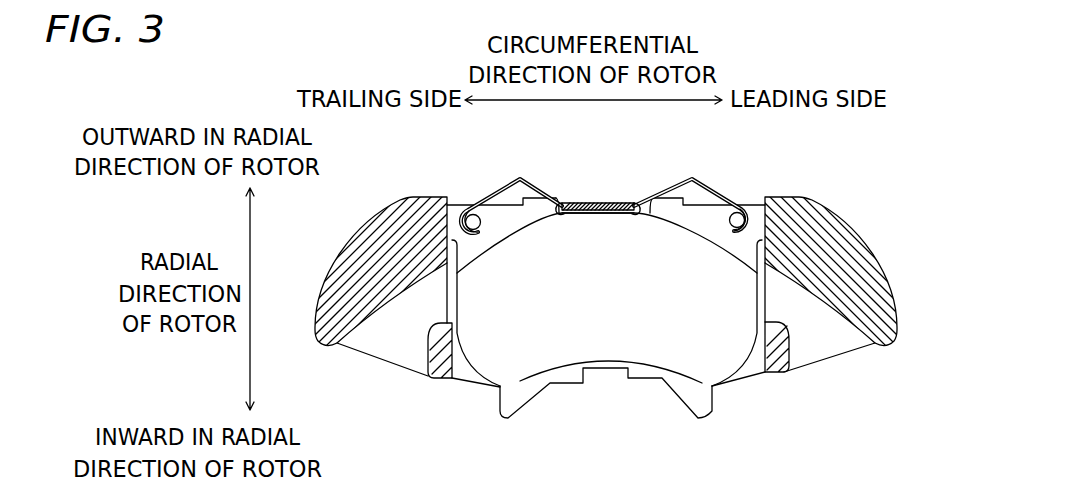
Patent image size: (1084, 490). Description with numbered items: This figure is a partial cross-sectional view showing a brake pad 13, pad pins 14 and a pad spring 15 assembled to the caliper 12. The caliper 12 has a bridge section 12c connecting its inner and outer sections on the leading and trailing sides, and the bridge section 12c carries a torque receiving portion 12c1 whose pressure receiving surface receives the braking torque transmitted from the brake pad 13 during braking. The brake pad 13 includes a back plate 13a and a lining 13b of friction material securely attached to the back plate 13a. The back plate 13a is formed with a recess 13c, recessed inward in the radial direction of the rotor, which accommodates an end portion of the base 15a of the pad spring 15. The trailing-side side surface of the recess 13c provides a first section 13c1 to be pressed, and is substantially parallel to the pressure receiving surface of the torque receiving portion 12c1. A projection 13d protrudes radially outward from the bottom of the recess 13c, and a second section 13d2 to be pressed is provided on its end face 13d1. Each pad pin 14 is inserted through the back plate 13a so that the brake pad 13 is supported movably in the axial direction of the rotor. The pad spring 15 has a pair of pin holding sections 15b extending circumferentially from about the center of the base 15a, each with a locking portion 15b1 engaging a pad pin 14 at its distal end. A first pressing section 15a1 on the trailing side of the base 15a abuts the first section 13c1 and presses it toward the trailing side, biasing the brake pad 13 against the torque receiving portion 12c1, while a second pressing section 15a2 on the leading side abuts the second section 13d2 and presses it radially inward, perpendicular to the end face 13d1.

The caliper 12 is at (606, 273).
The bridge section 12c is at (362, 233).
The torque receiving portion 12c1 is at (445, 198).
The brake pad 13 is at (622, 305).
The back plate 13a is at (743, 375).
The lining 13b is at (607, 358).
The recess 13c is at (658, 218).
The first section to be pressed 13c1 is at (528, 234).
The projection 13d is at (583, 203).
The end face 13d1 is at (592, 216).
The second section to be pressed 13d2 is at (640, 226).
The pad pin 14 is at (481, 222).
The pad spring 15 is at (600, 201).
The base 15a is at (594, 202).
The first pressing section 15a1 is at (563, 216).
The second pressing section 15a2 is at (628, 204).
The pin holding section 15b is at (540, 177).
The locking portion 15b1 is at (476, 207).